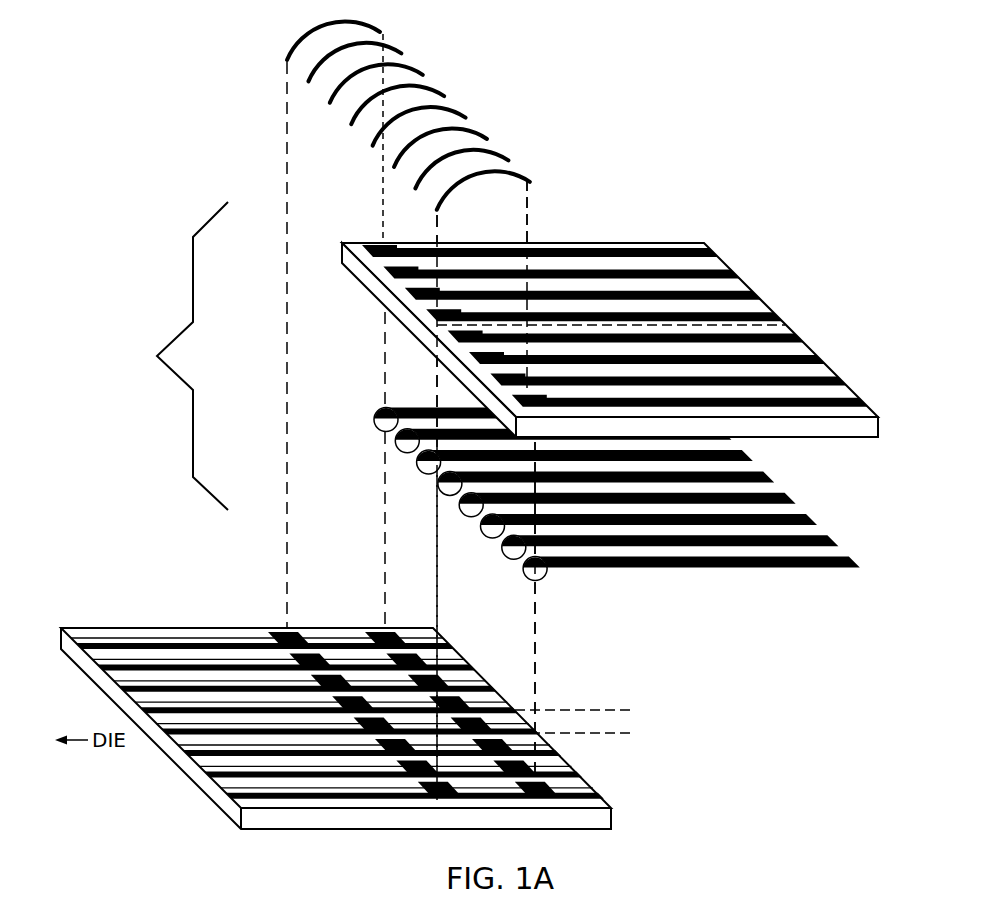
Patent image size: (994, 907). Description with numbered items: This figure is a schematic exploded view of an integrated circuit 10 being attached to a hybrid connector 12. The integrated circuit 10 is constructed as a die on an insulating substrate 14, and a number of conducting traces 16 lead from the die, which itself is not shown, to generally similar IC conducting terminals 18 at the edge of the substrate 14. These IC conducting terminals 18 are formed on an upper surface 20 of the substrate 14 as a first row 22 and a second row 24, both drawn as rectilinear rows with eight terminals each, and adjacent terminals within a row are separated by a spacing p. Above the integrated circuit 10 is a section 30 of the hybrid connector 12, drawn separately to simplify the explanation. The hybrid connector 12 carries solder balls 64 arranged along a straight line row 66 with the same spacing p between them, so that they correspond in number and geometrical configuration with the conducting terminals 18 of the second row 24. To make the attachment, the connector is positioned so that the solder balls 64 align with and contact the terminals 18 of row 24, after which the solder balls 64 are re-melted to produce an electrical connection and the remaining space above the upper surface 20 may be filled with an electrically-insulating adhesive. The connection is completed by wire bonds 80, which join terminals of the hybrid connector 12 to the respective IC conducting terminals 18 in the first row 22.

The integrated circuit 10 is at (330, 708).
The hybrid connector 12 is at (174, 356).
The insulating substrate 14 is at (283, 832).
The conducting traces 16 is at (168, 735).
The IC conducting terminals 18 is at (386, 710).
The upper surface 20 is at (177, 628).
The first row 22 is at (258, 609).
The second row 24 is at (363, 609).
The section of hybrid connector 30 is at (808, 367).
The solder balls 64 is at (589, 488).
The straight line row 66 is at (366, 395).
The wire bonds 80 is at (307, 79).
The separation p is at (603, 683).